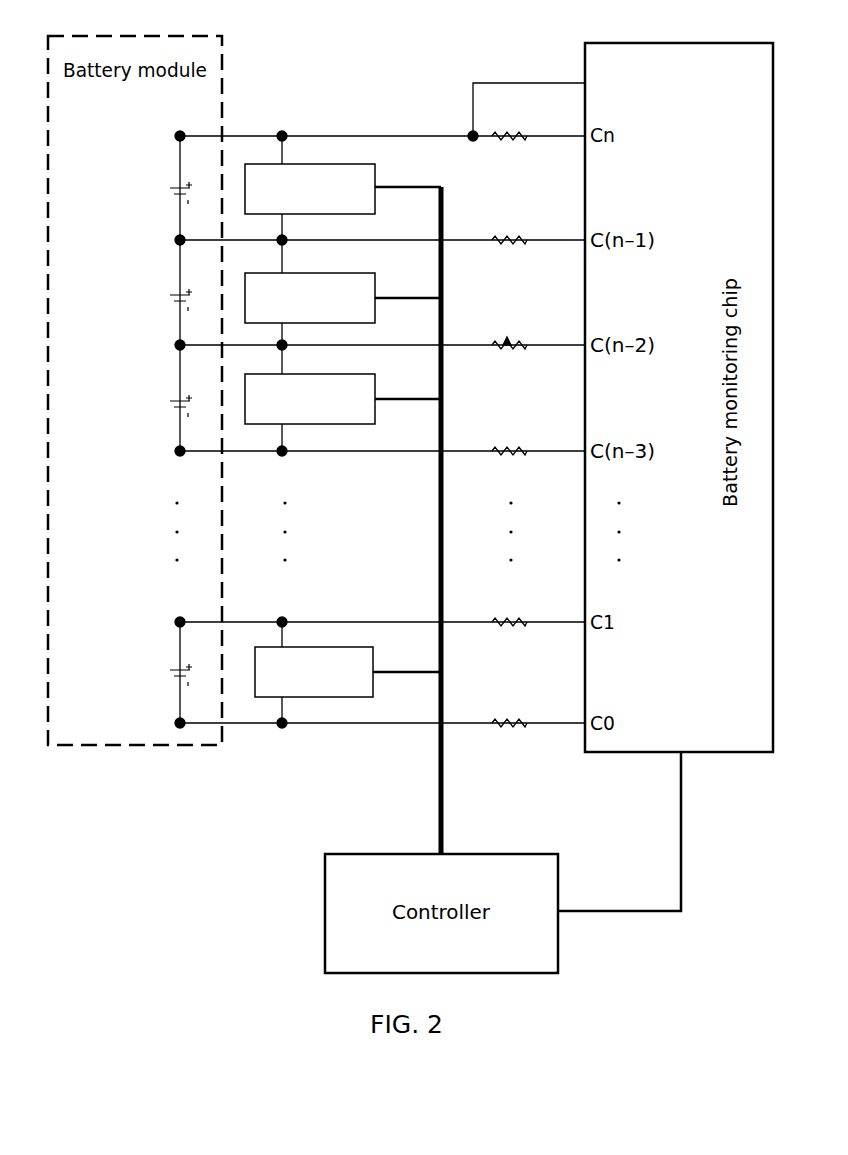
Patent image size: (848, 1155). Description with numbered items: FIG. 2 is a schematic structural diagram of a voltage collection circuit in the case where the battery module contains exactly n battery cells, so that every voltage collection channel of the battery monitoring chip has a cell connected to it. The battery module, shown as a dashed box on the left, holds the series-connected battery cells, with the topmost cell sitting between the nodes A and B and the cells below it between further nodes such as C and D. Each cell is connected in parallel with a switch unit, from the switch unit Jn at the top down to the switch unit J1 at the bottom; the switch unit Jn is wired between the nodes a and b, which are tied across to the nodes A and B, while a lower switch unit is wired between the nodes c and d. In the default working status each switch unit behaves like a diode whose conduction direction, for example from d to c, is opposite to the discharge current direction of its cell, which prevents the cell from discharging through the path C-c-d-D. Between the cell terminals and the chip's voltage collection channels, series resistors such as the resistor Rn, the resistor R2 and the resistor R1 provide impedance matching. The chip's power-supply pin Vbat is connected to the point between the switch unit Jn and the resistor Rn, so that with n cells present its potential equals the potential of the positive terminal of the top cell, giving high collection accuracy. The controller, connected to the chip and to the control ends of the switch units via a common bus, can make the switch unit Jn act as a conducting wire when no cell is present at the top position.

The positive terminal node of battery cell CELL(n) A is at (189, 127).
The junction node between CELL(n) and CELL(n-1) B is at (189, 232).
The junction node between CELL(n-1) and CELL(n-2) C is at (189, 337).
The junction node below CELL(n-2) D is at (190, 443).
The upper terminal of switch unit Jn a is at (289, 128).
The lower terminal of switch unit Jn b is at (289, 233).
The upper terminal of a switch unit c is at (288, 338).
The lower terminal of a switch unit d is at (289, 444).
The power-supply pin Vbat is at (550, 105).
The switch unit Jn is at (343, 189).
The switch unit J1 is at (348, 672).
The resistor Rn is at (509, 124).
The resistor R2 is at (509, 609).
The resistor R1 is at (509, 710).